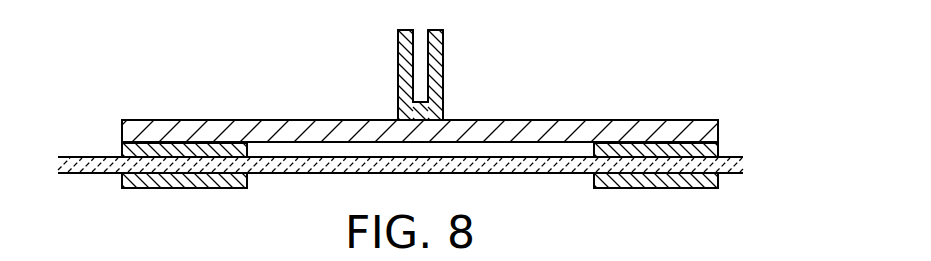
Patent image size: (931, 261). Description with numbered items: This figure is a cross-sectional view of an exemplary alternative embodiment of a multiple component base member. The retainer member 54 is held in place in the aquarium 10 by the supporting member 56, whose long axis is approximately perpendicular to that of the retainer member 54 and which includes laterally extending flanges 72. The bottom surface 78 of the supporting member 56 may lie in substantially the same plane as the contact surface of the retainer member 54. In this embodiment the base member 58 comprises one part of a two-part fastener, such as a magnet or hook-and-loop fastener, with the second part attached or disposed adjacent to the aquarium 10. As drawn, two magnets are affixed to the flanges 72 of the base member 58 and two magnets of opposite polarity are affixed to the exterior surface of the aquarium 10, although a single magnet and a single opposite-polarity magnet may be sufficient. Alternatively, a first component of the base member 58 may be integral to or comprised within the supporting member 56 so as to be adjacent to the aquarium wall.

The aquarium 10 is at (745, 165).
The retainer member 54 is at (444, 72).
The supporting member 56 is at (429, 145).
The base member 58 is at (121, 142).
The laterally extending flange 72 is at (666, 117).
The bottom surface 78 is at (502, 143).